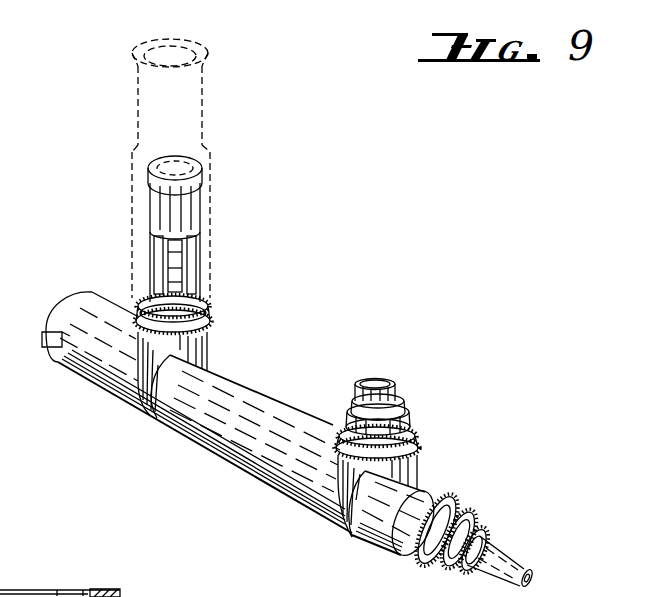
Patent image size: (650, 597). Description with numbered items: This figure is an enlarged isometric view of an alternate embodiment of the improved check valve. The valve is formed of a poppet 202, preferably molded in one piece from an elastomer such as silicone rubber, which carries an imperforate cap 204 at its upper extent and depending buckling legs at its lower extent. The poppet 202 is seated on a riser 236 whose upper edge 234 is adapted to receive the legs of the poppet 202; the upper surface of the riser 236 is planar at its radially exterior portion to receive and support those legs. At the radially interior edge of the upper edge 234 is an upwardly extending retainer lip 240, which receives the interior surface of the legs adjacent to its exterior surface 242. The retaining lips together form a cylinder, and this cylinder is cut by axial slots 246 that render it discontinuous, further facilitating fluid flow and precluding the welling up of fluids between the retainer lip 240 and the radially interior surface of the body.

The poppet 202 is at (204, 221).
The imperforate cap 204 is at (202, 186).
The upper edge 234 is at (405, 410).
The riser 236 is at (418, 460).
The retainer lip 240 is at (374, 381).
The exterior surface 242 is at (418, 436).
The axial slots 246 is at (396, 398).